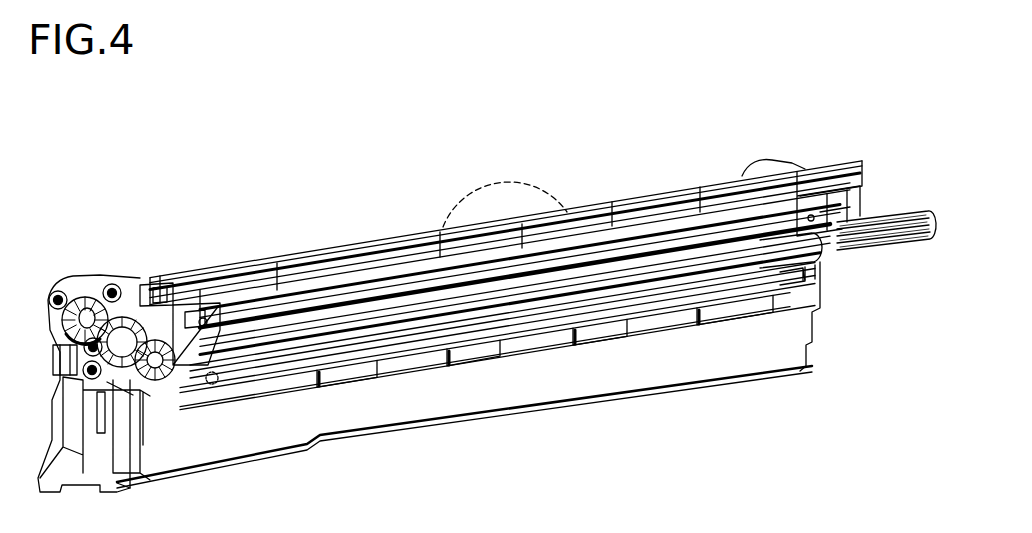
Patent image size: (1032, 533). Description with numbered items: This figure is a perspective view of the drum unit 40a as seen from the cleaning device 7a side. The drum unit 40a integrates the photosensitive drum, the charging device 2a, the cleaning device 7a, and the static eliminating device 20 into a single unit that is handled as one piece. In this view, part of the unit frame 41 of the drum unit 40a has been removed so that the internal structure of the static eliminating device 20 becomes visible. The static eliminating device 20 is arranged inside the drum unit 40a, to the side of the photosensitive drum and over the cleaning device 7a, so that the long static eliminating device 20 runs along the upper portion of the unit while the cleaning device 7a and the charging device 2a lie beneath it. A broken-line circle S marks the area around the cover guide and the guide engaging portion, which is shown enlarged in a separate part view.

The drum unit 40a is at (346, 190).
The broken-line circle S is at (537, 186).
The static eliminating device 20 is at (643, 215).
The unit frame 41 is at (840, 158).
The cleaning device 7a is at (687, 298).
The charging device 2a is at (440, 393).